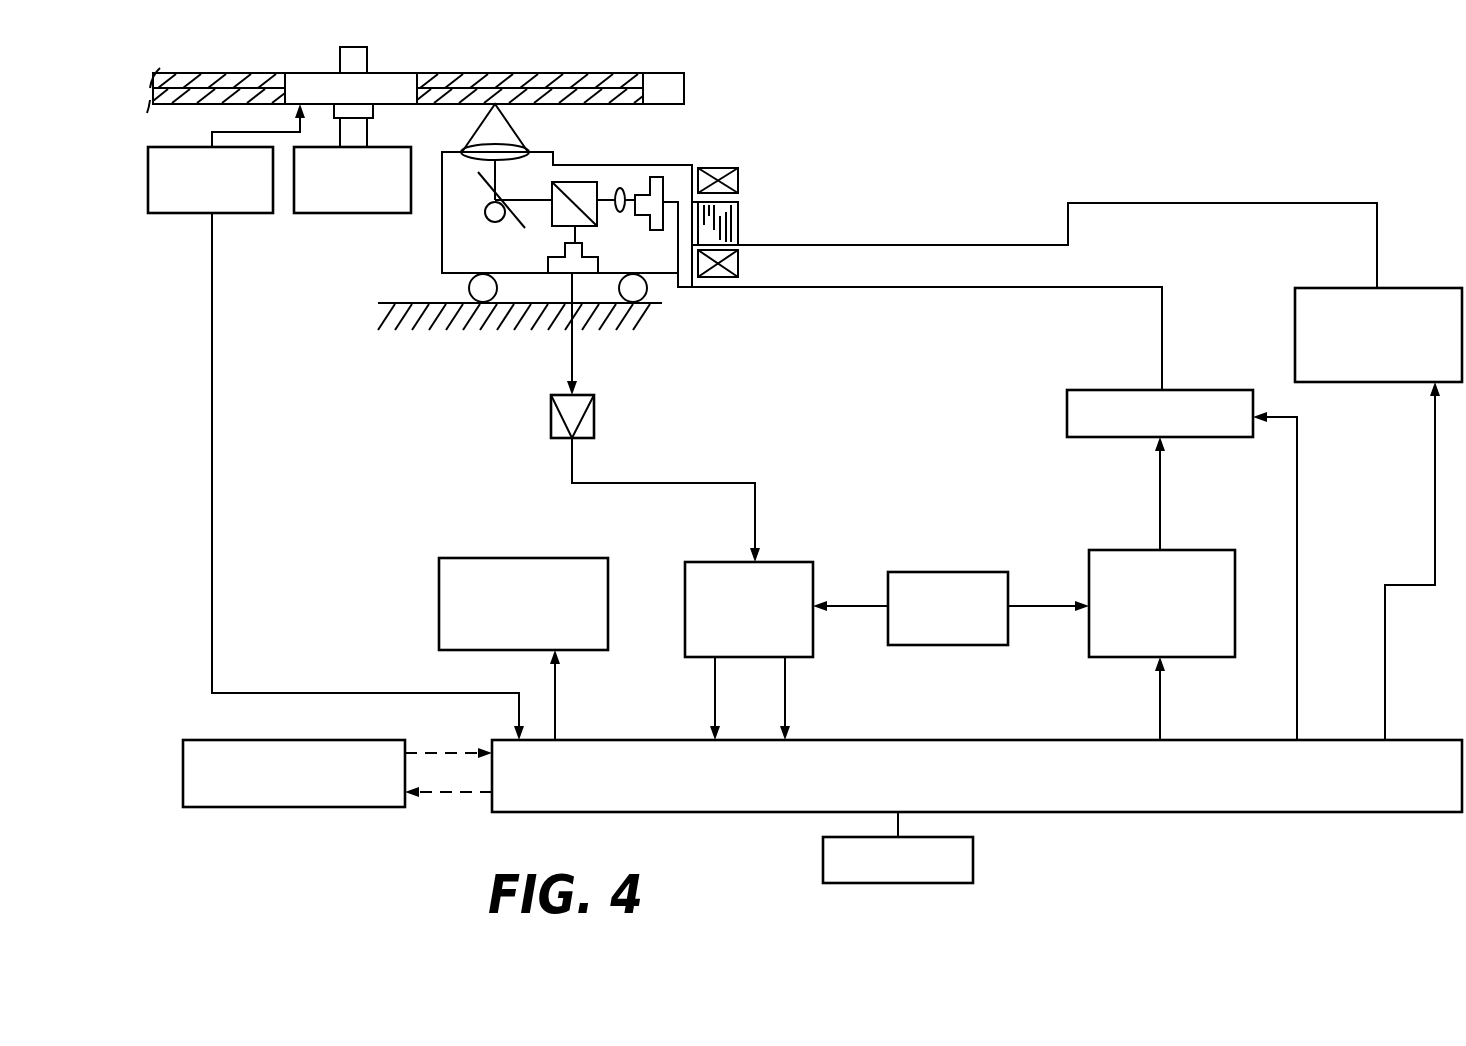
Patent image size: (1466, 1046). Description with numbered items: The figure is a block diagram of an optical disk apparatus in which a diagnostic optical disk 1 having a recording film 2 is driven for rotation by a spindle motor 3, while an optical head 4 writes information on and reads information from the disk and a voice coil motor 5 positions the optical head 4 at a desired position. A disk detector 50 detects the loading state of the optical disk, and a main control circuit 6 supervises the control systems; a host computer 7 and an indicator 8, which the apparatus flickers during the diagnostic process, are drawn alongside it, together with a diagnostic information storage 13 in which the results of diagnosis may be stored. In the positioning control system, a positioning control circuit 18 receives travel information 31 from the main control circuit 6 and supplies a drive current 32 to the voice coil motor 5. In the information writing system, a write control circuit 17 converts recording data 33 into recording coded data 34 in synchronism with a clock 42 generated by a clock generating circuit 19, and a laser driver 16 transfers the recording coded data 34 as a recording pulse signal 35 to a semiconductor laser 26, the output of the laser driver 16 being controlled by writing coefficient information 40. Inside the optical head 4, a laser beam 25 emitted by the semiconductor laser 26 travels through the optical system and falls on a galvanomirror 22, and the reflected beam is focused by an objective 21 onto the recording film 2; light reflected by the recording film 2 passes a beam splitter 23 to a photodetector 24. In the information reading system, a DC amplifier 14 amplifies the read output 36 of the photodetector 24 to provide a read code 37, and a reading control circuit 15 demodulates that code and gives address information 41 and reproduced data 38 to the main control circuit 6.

The diagnostic optical disk 1 is at (313, 88).
The recording film 2 is at (556, 82).
The spindle motor 3 is at (340, 213).
The optical head 4 is at (568, 165).
The voice coil motor 5 is at (738, 218).
The main control circuit 6 is at (1155, 795).
The host computer 7 is at (318, 807).
The indicator 8 is at (823, 858).
The diagnostic information storage 13 is at (439, 590).
The DC amplifier 14 is at (551, 418).
The reading control circuit 15 is at (782, 562).
The laser driver 16 is at (1067, 410).
The write control circuit 17 is at (1127, 550).
The positioning control circuit 18 is at (1400, 288).
The clock generating circuit 19 is at (947, 572).
The objective 21 is at (470, 152).
The galvanomirror 22 is at (483, 207).
The beam splitter 23 is at (560, 183).
The photodetector 24 is at (548, 265).
The laser beam 25 is at (606, 203).
The semiconductor laser 26 is at (652, 184).
The travel information 31 is at (1435, 460).
The drive current 32 is at (1110, 203).
The recording data 33 is at (1160, 700).
The recording coded data 34 is at (1160, 516).
The recording pulse signal 35 is at (943, 290).
The read output 36 is at (572, 352).
The read code 37 is at (620, 483).
The reproduced data 38 is at (785, 680).
The writing coefficient information 40 is at (1292, 412).
The address information 41 is at (715, 700).
The clock 42 is at (870, 605).
The disk detector 50 is at (185, 213).